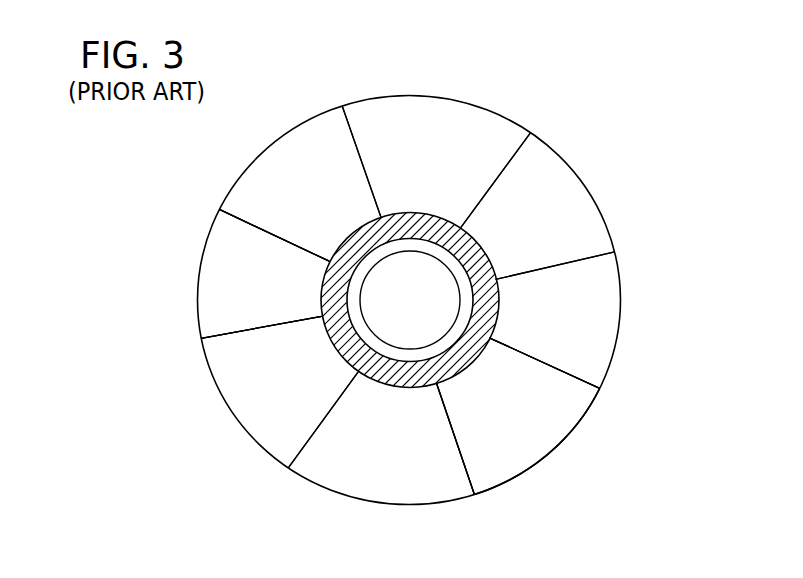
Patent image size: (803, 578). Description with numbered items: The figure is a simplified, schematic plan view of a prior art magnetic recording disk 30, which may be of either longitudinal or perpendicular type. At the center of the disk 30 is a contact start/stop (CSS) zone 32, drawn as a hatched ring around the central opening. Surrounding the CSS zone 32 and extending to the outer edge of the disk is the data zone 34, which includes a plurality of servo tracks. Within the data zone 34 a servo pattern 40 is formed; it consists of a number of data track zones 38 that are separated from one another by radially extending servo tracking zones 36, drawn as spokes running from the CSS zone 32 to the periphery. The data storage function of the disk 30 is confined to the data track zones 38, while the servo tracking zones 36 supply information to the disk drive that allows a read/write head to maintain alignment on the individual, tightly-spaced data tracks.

The magnetic recording disk 30 is at (605, 133).
The contact start/stop (CSS) zone 32 is at (492, 311).
The data zone 34 is at (535, 410).
The servo tracking zones 36 is at (363, 168).
The data track zones 38 is at (342, 142).
The servo pattern 40 is at (264, 289).